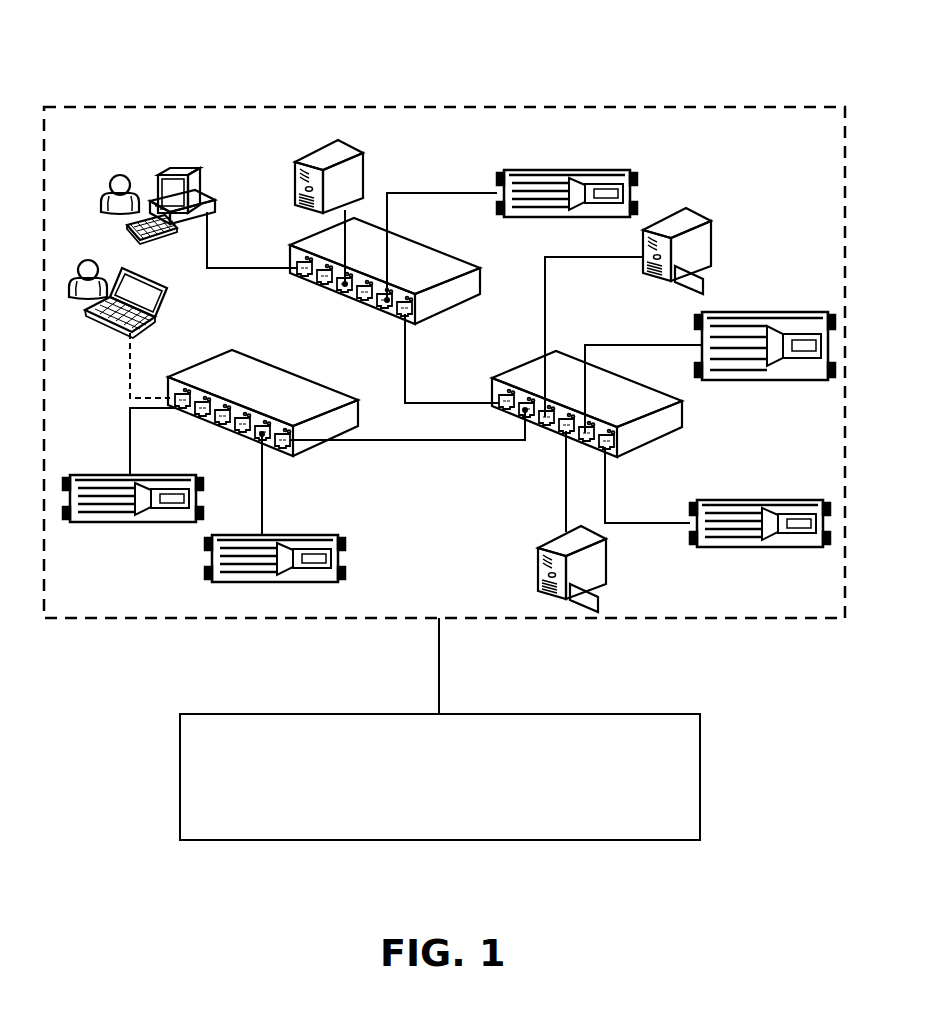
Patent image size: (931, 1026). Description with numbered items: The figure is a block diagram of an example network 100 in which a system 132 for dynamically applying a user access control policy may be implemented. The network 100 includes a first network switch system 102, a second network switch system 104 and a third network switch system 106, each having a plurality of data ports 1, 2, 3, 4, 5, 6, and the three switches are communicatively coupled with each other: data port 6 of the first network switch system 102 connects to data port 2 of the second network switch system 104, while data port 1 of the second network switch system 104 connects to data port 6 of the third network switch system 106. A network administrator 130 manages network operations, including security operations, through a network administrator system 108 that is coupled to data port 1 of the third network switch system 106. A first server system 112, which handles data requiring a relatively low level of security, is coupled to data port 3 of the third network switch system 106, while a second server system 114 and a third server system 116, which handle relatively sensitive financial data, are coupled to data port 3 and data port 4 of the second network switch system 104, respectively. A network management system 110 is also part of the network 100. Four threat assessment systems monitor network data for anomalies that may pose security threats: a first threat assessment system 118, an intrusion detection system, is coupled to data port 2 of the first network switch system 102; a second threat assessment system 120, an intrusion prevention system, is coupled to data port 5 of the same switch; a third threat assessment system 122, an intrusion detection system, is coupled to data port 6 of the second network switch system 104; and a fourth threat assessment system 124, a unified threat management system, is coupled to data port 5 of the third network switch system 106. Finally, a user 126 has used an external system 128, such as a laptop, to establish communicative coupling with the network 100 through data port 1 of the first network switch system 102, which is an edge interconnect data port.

The network 100 is at (236, 107).
The first network switch system 102 is at (322, 397).
The second network switch system 104 is at (608, 387).
The third network switch system 106 is at (387, 280).
The network administrator system 108 is at (200, 187).
The network management system 110 is at (763, 312).
The first server system 112 is at (355, 163).
The second server system 114 is at (702, 240).
The third server system 116 is at (597, 570).
The first threat assessment system 118 is at (152, 473).
The second threat assessment system 120 is at (288, 535).
The third threat assessment system 122 is at (730, 502).
The fourth threat assessment system 124 is at (545, 168).
The user 126 is at (80, 262).
The external system 128 is at (167, 296).
The network administrator 130 is at (110, 184).
The system 132 is at (440, 729).
The data port 1 is at (299, 277).
The data port 2 is at (319, 285).
The data port 3 is at (338, 293).
The data port 4 is at (358, 301).
The data port 5 is at (378, 309).
The data port 6 is at (398, 317).